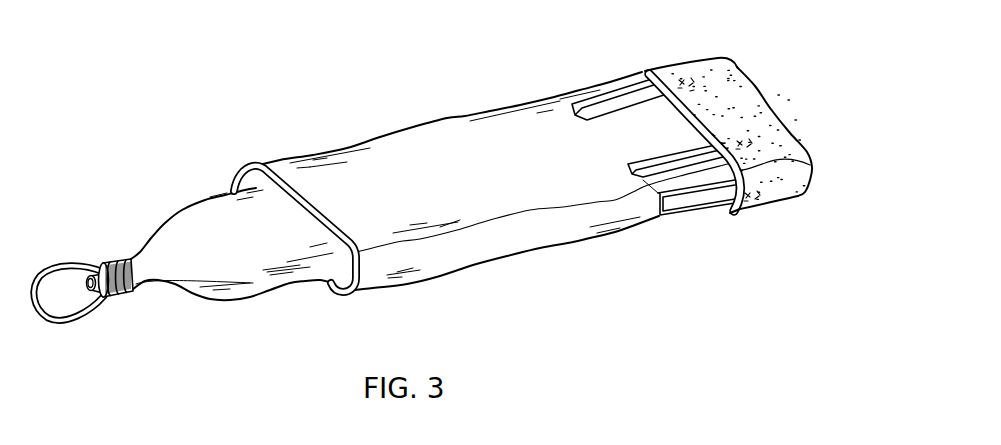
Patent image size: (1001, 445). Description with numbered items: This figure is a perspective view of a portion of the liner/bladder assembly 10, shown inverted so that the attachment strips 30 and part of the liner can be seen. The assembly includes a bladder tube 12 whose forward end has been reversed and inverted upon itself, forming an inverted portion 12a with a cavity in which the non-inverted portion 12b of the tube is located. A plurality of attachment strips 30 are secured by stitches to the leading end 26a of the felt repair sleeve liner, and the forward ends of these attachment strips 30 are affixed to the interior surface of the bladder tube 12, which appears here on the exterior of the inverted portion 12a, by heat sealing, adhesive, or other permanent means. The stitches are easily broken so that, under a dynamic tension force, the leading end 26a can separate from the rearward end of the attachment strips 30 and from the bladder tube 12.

The liner/bladder assembly 10 is at (405, 102).
The bladder tube 12 is at (475, 248).
The inverted portion 12a is at (315, 188).
The non-inverted portion 12b is at (200, 223).
The leading end 26a is at (722, 72).
The attachment strips 30 is at (660, 203).